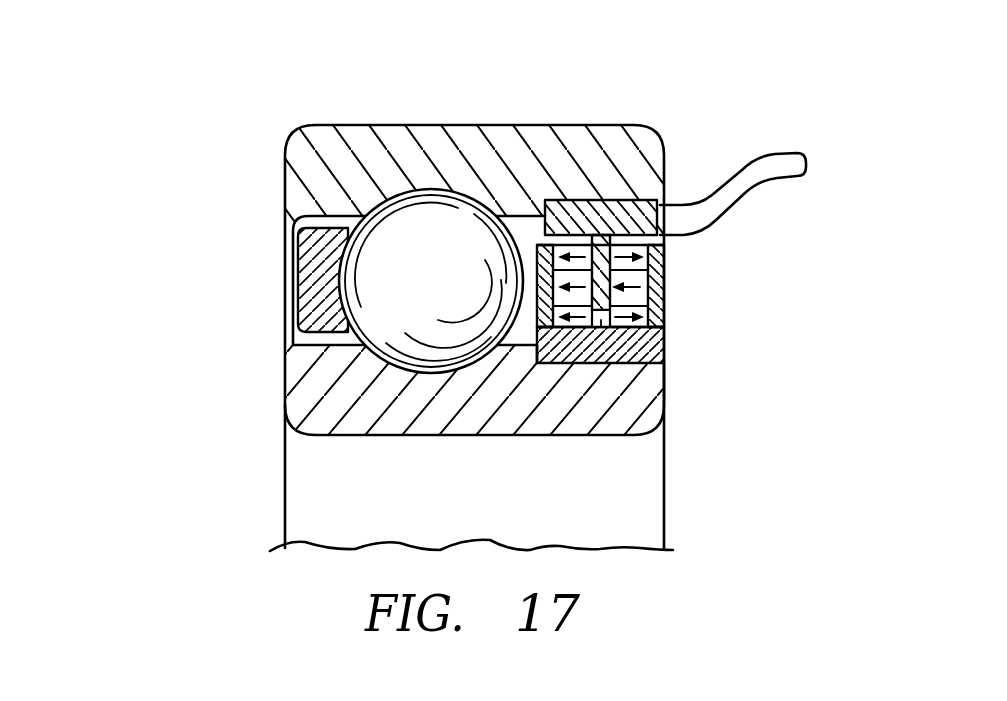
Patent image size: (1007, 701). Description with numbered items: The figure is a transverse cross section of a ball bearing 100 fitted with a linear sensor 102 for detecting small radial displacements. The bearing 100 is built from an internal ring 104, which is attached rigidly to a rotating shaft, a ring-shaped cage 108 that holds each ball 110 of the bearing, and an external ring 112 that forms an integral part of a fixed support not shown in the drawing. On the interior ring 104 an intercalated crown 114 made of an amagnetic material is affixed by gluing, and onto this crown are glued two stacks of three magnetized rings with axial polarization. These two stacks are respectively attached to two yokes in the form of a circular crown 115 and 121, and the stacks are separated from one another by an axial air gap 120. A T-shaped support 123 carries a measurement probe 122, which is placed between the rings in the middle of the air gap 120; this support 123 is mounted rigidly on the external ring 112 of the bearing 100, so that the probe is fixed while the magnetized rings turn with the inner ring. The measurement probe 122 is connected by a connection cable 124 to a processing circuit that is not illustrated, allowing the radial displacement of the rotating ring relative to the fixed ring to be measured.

The ball bearing 100 is at (185, 268).
The linear sensor 102 is at (700, 274).
The internal ring 104 is at (333, 369).
The ring-shaped cage 108 is at (320, 248).
The ball 110 is at (408, 205).
The external ring 112 is at (388, 133).
The intercalated crown 114 is at (637, 347).
The yoke in the form of a circular crown 115 is at (592, 268).
The axial air gap 120 is at (596, 330).
The yoke in the form of a circular crown 121 is at (657, 298).
The measurement probe 122 is at (592, 306).
The T-shaped support 123 is at (604, 213).
The connection cable 124 is at (765, 164).